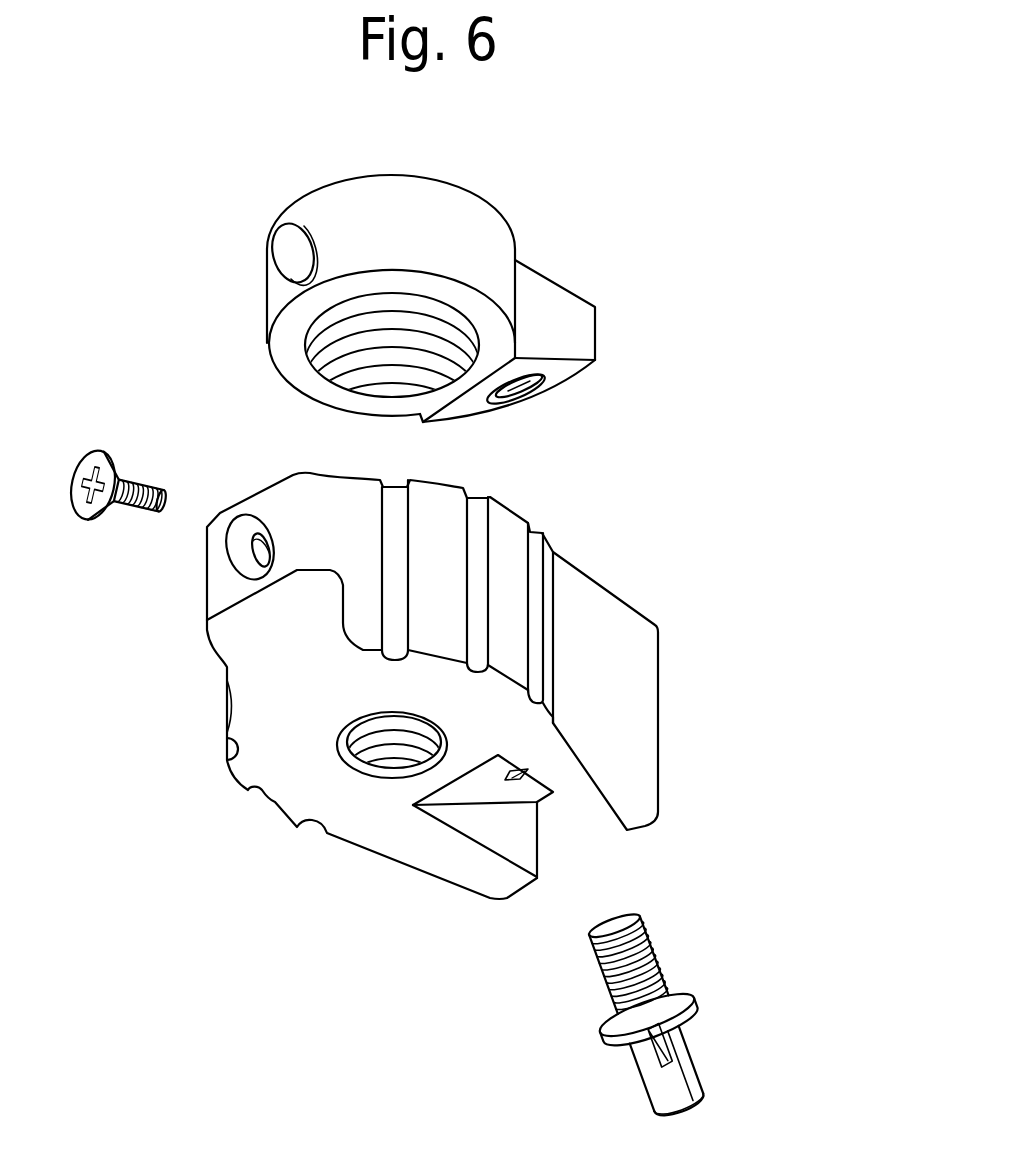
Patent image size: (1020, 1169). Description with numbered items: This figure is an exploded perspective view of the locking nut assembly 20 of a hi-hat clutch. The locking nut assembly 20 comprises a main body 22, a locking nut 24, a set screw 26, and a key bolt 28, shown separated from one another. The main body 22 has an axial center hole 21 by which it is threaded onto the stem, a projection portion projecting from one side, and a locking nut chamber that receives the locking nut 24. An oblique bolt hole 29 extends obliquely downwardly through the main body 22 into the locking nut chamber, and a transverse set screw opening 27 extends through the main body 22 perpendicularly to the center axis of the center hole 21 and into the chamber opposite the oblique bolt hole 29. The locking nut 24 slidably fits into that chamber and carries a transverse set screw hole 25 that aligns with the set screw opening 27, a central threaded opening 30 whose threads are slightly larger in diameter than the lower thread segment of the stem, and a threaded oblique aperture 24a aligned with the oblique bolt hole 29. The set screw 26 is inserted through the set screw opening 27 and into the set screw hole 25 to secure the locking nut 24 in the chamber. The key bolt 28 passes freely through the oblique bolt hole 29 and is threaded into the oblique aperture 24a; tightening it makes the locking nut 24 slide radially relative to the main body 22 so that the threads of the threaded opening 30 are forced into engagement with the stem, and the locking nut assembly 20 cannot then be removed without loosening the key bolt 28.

The locking nut assembly 20 is at (464, 731).
The axial center hole 21 is at (378, 760).
The main body 22 is at (640, 690).
The locking nut 24 is at (461, 322).
The threaded oblique aperture 24a is at (538, 392).
The transverse set screw hole 25 is at (310, 242).
The set screw 26 is at (101, 451).
The transverse set screw opening 27 is at (250, 540).
The key bolt 28 is at (692, 1083).
The oblique bolt hole 29 is at (512, 783).
The central threaded opening 30 is at (350, 357).